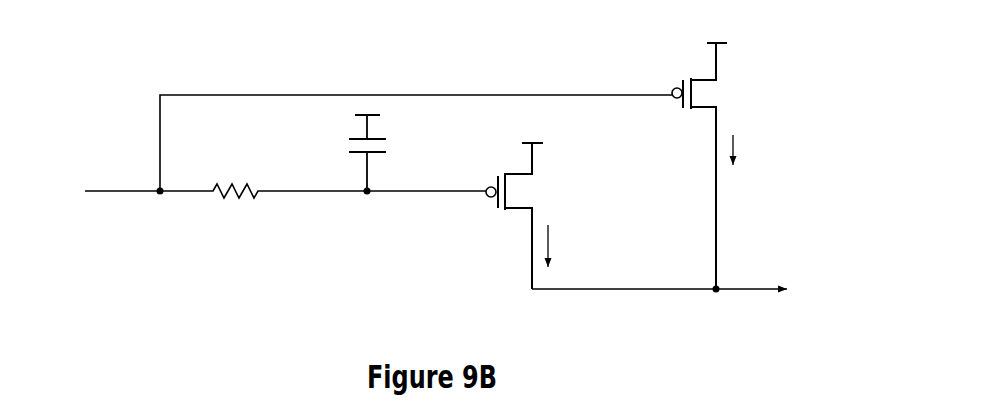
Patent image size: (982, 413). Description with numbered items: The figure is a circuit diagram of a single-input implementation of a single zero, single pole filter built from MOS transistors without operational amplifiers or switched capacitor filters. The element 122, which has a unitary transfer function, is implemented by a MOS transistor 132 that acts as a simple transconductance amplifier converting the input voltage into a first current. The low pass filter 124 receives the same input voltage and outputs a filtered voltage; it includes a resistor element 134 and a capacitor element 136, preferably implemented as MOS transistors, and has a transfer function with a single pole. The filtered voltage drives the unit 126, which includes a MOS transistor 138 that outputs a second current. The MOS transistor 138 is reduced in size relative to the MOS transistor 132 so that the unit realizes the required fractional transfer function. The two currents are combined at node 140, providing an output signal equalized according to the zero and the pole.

The element having unitary transfer function 122 is at (479, 196).
The low pass filter 124 is at (273, 206).
The unit 126 is at (489, 219).
The MOS transistor 132 is at (727, 85).
The resistor element 134 is at (238, 200).
The capacitor element 136 is at (342, 145).
The MOS transistor 138 is at (547, 182).
The node 140 is at (716, 292).